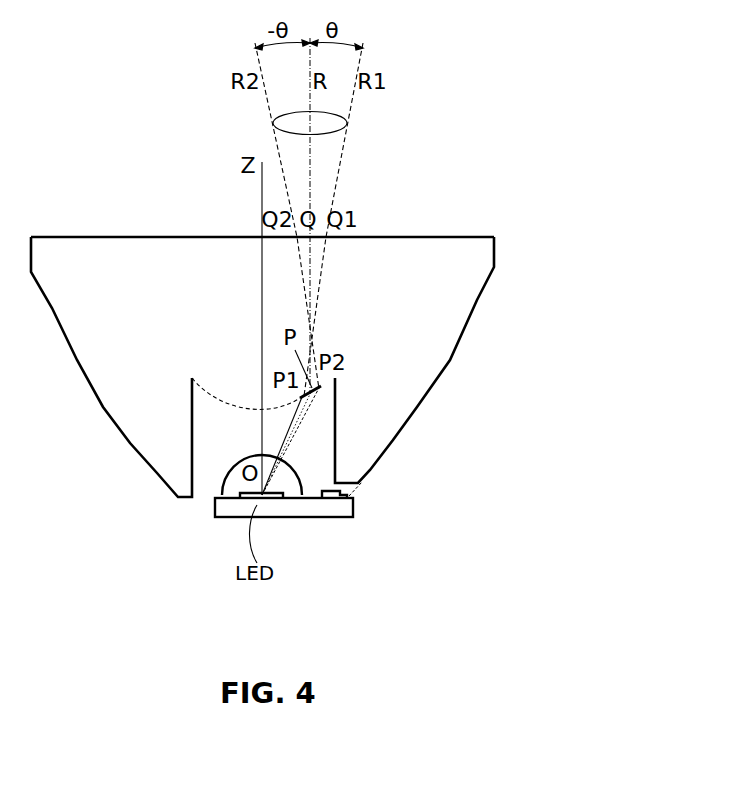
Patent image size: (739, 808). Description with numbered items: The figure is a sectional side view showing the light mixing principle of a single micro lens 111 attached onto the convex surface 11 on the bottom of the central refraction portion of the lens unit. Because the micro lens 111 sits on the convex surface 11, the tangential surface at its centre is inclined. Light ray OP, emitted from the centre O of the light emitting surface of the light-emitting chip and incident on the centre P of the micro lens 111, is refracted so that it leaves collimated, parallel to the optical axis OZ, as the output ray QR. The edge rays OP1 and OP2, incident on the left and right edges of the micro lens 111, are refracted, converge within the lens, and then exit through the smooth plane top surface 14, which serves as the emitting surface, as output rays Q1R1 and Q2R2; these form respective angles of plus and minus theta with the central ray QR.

The convex surface 11 is at (223, 398).
The top surface 14 is at (383, 236).
The micro lens 111 is at (321, 386).